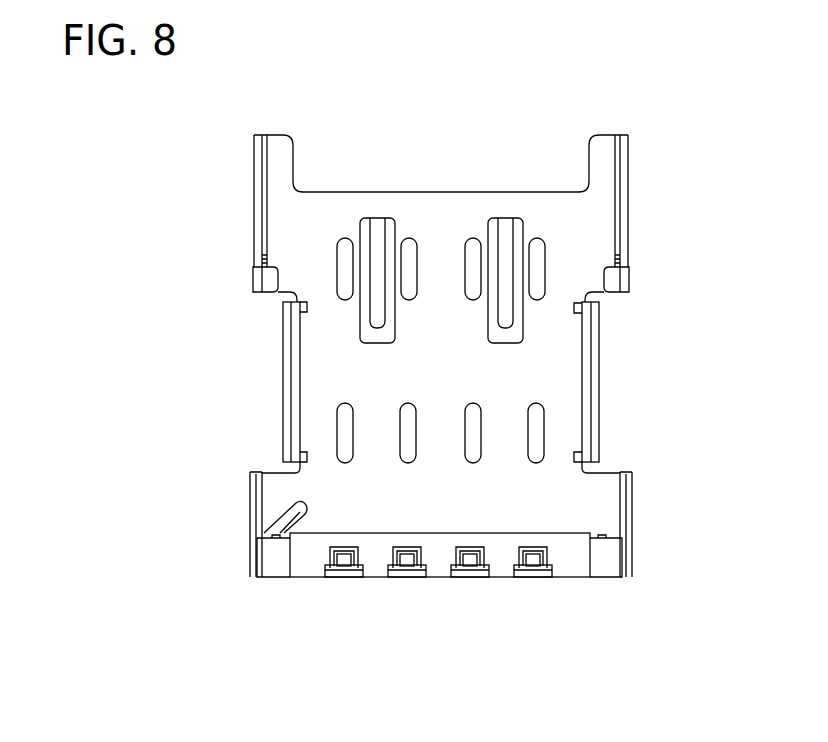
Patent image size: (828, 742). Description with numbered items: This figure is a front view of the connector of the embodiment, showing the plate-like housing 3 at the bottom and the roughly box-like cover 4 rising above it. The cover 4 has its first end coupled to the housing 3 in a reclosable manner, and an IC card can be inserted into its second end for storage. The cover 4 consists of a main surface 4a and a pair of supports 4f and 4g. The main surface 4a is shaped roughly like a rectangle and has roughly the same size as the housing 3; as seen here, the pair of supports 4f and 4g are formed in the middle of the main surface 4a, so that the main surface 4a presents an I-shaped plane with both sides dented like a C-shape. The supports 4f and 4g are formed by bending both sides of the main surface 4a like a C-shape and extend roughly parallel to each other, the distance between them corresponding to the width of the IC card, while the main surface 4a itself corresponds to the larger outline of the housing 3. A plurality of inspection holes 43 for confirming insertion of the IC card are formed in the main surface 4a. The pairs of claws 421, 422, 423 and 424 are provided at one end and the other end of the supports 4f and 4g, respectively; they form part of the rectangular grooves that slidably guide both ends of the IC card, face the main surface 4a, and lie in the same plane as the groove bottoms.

The housing 3 is at (266, 580).
The cover 4 is at (240, 177).
The main surface 4a is at (573, 228).
The support 4f is at (282, 425).
The support 4g is at (598, 424).
The inspection holes 43 is at (408, 247).
The claw 421 is at (305, 466).
The claw 422 is at (575, 473).
The claw 423 is at (300, 310).
The claw 424 is at (582, 311).